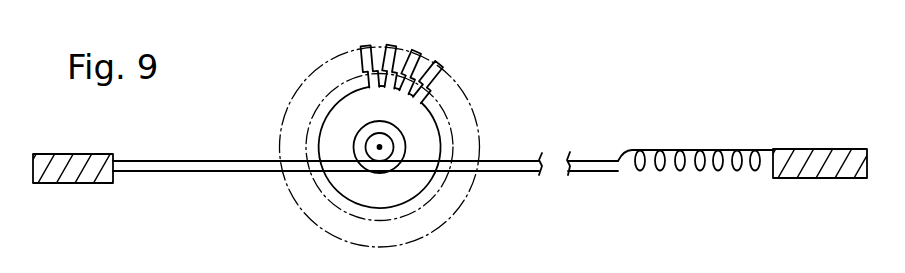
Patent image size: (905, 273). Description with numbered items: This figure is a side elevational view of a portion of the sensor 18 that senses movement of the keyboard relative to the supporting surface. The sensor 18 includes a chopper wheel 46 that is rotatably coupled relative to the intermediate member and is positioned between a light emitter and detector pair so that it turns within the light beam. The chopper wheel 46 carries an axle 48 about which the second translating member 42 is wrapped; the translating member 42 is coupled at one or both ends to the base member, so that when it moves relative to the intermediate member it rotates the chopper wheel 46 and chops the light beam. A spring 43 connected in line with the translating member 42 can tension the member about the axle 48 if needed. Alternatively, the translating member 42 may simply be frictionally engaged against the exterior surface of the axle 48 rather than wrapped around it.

The second translating member 42 is at (519, 161).
The spring 43 is at (718, 170).
The chopper wheel 46 is at (338, 98).
The sensor 18 is at (447, 72).
The axle 48 is at (382, 146).